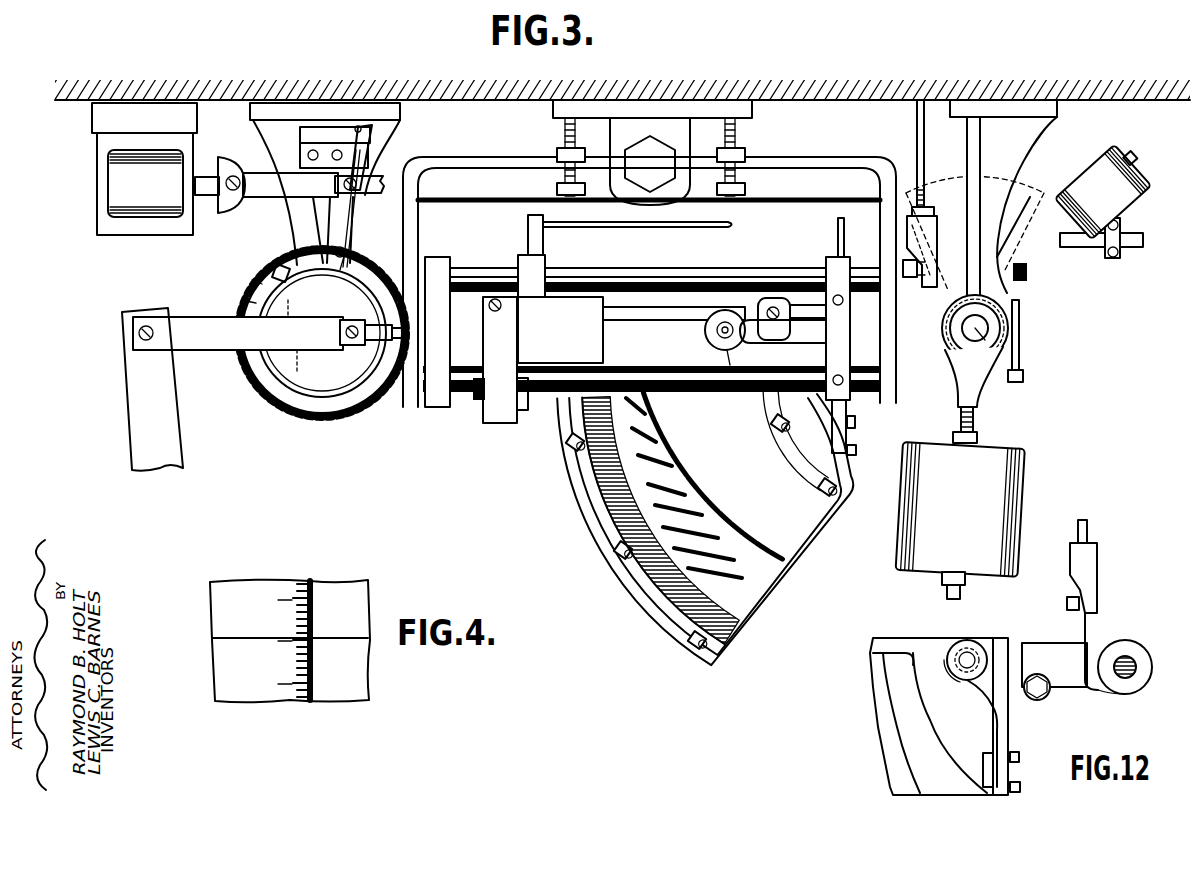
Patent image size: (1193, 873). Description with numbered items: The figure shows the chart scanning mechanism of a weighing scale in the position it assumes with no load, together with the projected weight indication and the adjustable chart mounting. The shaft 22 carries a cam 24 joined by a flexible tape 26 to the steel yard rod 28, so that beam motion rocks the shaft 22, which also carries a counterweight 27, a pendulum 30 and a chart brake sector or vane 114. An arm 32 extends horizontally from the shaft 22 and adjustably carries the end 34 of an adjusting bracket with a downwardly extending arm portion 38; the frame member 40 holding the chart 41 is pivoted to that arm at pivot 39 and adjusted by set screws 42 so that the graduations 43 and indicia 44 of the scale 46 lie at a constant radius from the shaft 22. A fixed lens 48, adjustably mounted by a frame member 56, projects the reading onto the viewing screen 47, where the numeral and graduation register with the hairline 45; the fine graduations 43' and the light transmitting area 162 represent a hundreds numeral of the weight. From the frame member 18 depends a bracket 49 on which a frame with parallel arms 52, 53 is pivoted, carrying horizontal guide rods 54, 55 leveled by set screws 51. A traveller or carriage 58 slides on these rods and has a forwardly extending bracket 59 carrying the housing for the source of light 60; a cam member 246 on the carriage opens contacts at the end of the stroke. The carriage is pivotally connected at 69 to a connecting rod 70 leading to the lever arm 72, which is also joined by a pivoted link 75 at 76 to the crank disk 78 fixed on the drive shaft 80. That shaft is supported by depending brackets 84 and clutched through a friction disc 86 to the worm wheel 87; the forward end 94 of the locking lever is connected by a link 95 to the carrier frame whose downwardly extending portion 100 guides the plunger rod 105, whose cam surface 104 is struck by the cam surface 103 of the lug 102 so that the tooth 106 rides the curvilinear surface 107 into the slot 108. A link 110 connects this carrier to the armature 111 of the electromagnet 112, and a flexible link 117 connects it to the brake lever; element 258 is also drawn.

In FIG. 3, the supporting surface or frame member 18 is at (848, 100).
In FIG. 3, the shaft 22 is at (990, 360).
In FIG. 12, the shaft 22 is at (1133, 660).
In FIG. 3, the cam 24 is at (950, 360).
In FIG. 12, the cam 24 is at (1117, 692).
In FIG. 3, the flexible tape 26 is at (914, 282).
In FIG. 12, the flexible tape 26 is at (1085, 645).
In FIG. 3, the counterweight 27 is at (1090, 178).
In FIG. 3, the steel yard rod 28 is at (915, 137).
In FIG. 12, the steel yard rod 28 is at (1090, 533).
In FIG. 3, the pendulum 30 is at (1020, 498).
In FIG. 3, the arm 32 is at (915, 340).
In FIG. 12, the arm 32 is at (1055, 695).
In FIG. 3, the end of adjusting bracket 34 is at (850, 272).
In FIG. 12, the end of adjusting bracket 34 is at (1017, 655).
In FIG. 3, the downwardly extending arm portion 38 is at (846, 437).
In FIG. 12, the downwardly extending arm portion 38 is at (993, 775).
In FIG. 12, the pivot 39 is at (965, 655).
In FIG. 3, the frame member 40 is at (790, 567).
In FIG. 12, the frame member 40 is at (904, 638).
In FIG. 3, the chart 41 is at (748, 622).
In FIG. 12, the chart 41 is at (878, 692).
In FIG. 3, the set screws 42 is at (858, 412).
In FIG. 12, the set screws 42 is at (1019, 755).
In FIG. 3, the graduations 43 is at (723, 518).
In FIG. 4, the graduations 43 is at (285, 661).
In FIG. 4, the scale graduations 43' is at (295, 622).
In FIG. 4, the indicia 44 is at (300, 668).
In FIG. 4, the hairline 45 is at (348, 635).
In FIG. 3, the scale 46 is at (782, 494).
In FIG. 12, the scale 46 is at (890, 729).
In FIG. 4, the viewing screen 47 is at (341, 590).
In FIG. 3, the fixed lens 48 is at (718, 338).
In FIG. 3, the bracket 49 is at (752, 108).
In FIG. 3, the set screws 51 is at (562, 176).
In FIG. 3, the depending parallel arm 52 is at (413, 232).
In FIG. 3, the depending parallel arm 53 is at (880, 170).
In FIG. 3, the horizontal guide rod 54 is at (715, 282).
In FIG. 3, the horizontal guide rod 55 is at (448, 395).
In FIG. 3, the frame member 56 is at (790, 300).
In FIG. 3, the traveller or carriage 58 is at (537, 283).
In FIG. 3, the forwardly extending bracket 59 is at (500, 400).
In FIG. 3, the source of light 60 is at (603, 346).
In FIG. 3, the pivotal connection 69 is at (380, 338).
In FIG. 3, the link or connecting rod 70 is at (300, 340).
In FIG. 3, the lever arm 72 is at (168, 405).
In FIG. 3, the pivoted link 75 is at (302, 345).
In FIG. 3, the crank disk connection 76 is at (288, 318).
In FIG. 3, the crank disk 78 is at (285, 363).
In FIG. 3, the drive shaft 80 is at (340, 342).
In FIG. 3, the depending bracket 84 is at (385, 131).
In FIG. 3, the friction disc 86 is at (248, 302).
In FIG. 3, the worm wheel 87 is at (255, 280).
In FIG. 3, the forward end of locking lever 94 is at (290, 262).
In FIG. 3, the link 95 is at (273, 270).
In FIG. 3, the downwardly extending portion 100 is at (345, 217).
In FIG. 3, the lug 102 is at (338, 256).
In FIG. 3, the cam surface 103 is at (345, 265).
In FIG. 3, the cam surface 104 is at (347, 238).
In FIG. 3, the plunger rod 105 is at (360, 155).
In FIG. 3, the tooth 106 is at (362, 125).
In FIG. 3, the curvilinear surface 107 is at (348, 127).
In FIG. 3, the slot 108 is at (322, 127).
In FIG. 3, the link 110 is at (255, 177).
In FIG. 3, the armature 111 is at (207, 177).
In FIG. 3, the electromagnet 112 is at (118, 185).
In FIG. 3, the chart brake sector or vane 114 is at (1020, 205).
In FIG. 3, the flexible link 117 is at (367, 180).
In FIG. 3, the light transmitting area 162 is at (636, 402).
In FIG. 3, the cam member 246 is at (610, 228).
In FIG. 3, the pin 258 is at (838, 235).